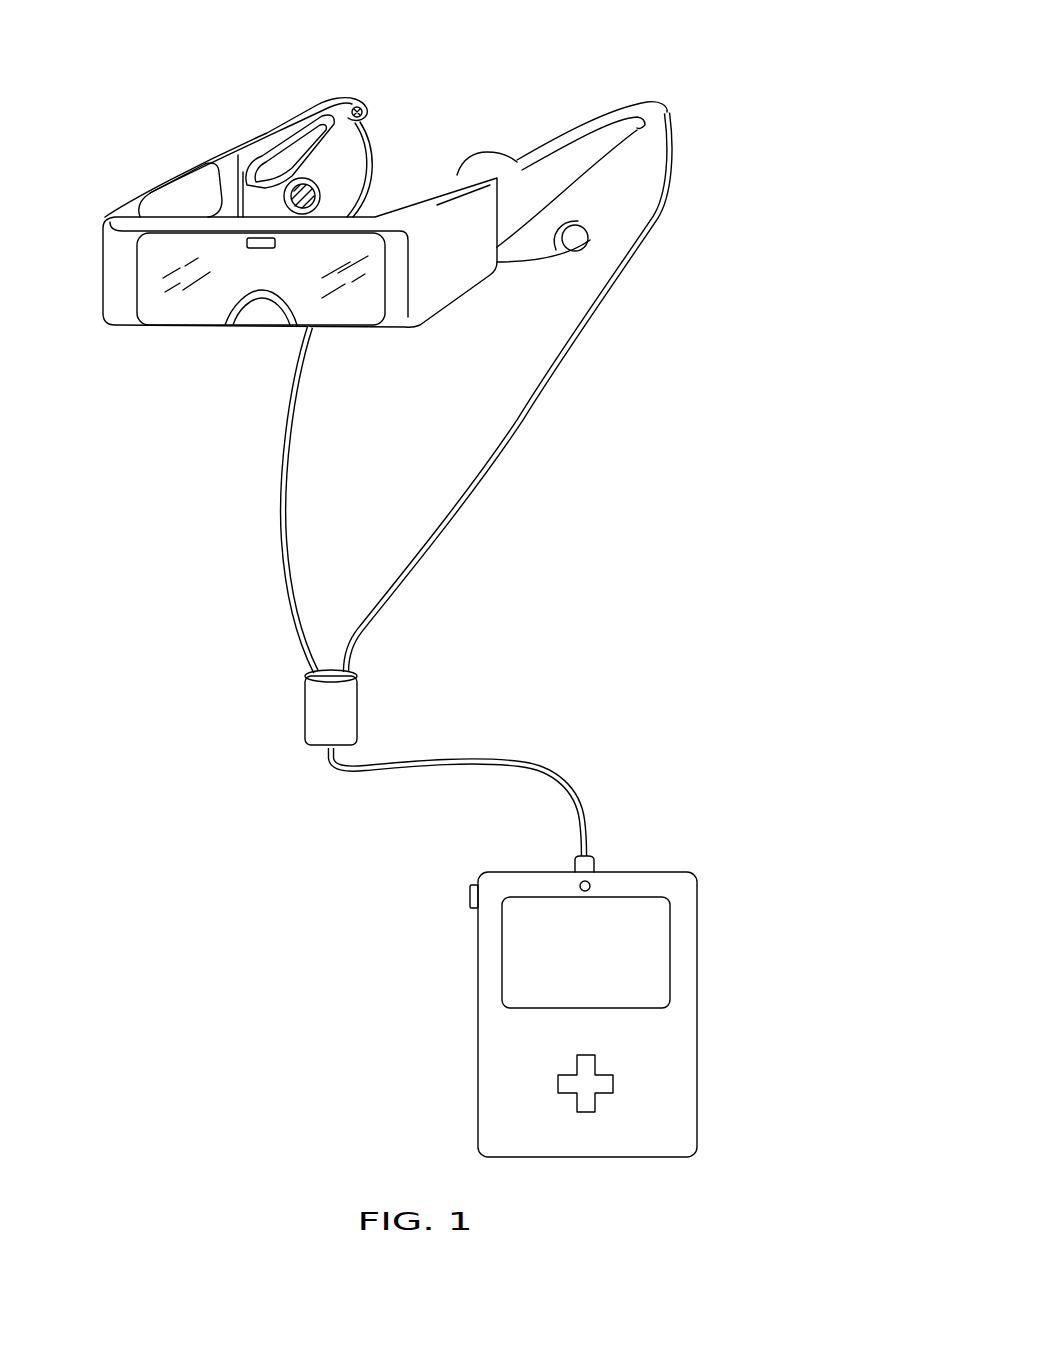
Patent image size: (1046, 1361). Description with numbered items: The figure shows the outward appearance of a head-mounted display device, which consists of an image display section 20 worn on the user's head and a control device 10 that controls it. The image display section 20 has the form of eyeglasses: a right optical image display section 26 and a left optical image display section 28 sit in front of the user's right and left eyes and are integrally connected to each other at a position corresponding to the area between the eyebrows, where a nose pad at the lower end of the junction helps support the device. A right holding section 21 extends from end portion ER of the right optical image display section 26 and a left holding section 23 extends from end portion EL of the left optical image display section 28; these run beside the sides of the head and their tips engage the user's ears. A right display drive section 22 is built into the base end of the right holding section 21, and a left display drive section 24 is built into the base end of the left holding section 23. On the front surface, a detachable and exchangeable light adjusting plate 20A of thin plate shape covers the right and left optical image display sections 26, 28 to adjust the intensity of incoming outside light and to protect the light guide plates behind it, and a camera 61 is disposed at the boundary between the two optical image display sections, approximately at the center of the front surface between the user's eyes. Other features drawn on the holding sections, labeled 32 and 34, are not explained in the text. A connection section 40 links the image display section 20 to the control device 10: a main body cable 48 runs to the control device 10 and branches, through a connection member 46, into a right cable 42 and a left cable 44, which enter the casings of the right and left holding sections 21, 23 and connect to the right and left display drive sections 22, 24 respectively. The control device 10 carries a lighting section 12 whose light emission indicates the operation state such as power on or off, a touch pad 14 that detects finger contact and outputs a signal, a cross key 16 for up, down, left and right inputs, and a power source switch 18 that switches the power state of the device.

The control device 10 is at (578, 971).
The lighting section 12 is at (592, 884).
The touch pad 14 is at (668, 940).
The cross key 16 is at (613, 1083).
The power source switch 18 is at (470, 896).
The image display section 20 is at (136, 386).
The light adjusting plate 20A is at (316, 305).
The right holding section 21 is at (244, 126).
The right display drive section 22 is at (180, 188).
The left holding section 23 is at (586, 152).
The left display drive section 24 is at (420, 198).
The right optical image display section 26 is at (160, 325).
The left optical image display section 28 is at (342, 328).
The camera 32 is at (313, 187).
The earphone 34 is at (590, 236).
The connection section 40 is at (476, 492).
The right cable 42 is at (285, 450).
The left cable 44 is at (557, 378).
The connection member 46 is at (360, 700).
The main body cable 48 is at (570, 782).
The camera 61 is at (262, 250).